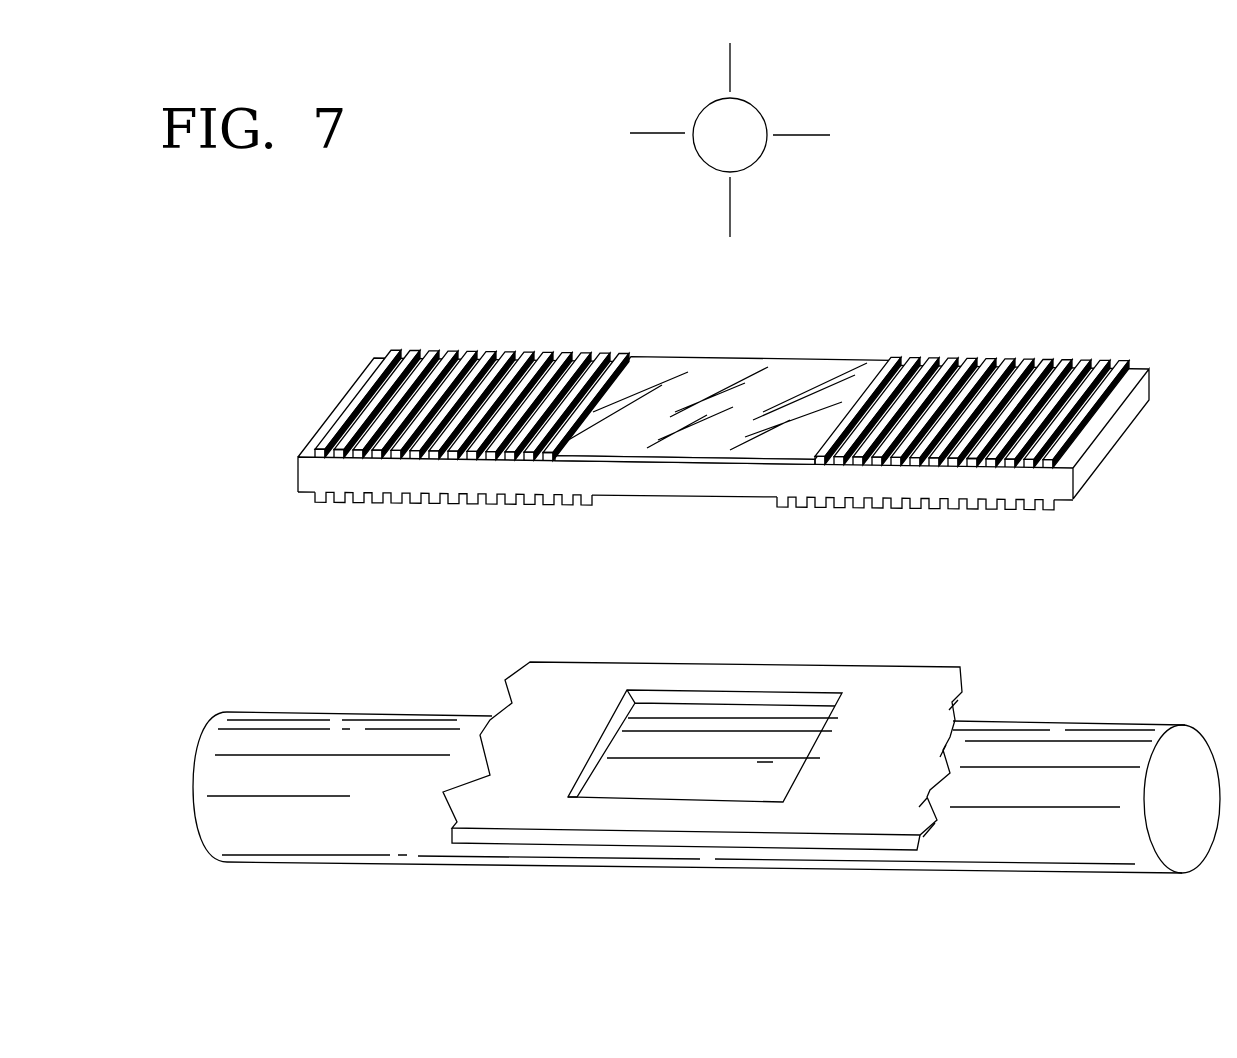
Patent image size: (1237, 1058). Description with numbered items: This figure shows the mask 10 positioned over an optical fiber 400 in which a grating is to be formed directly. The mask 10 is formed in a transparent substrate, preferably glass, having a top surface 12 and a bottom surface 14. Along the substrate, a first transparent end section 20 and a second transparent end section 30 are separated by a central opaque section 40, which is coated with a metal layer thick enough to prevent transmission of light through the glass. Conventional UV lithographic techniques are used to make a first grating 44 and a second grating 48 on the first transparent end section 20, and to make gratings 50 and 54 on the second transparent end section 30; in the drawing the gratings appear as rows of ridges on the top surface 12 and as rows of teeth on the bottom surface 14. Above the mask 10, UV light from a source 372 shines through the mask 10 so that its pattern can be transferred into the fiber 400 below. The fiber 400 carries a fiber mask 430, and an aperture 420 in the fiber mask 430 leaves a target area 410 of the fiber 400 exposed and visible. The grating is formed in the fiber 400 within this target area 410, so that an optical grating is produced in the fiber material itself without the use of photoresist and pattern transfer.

The mask 10 is at (325, 388).
The top surface 12 is at (661, 348).
The bottom surface 14 is at (626, 512).
The first transparent end section 20 is at (515, 342).
The second transparent end section 30 is at (1012, 348).
The central opaque section 40 is at (717, 383).
The first grating 44 is at (447, 403).
The second grating 48 is at (405, 503).
The grating 50 is at (1023, 385).
The grating 54 is at (930, 505).
The source 372 is at (692, 113).
The optical fiber 400 is at (357, 708).
The target area 410 is at (695, 743).
The aperture 420 is at (613, 785).
The fiber mask 430 is at (867, 800).